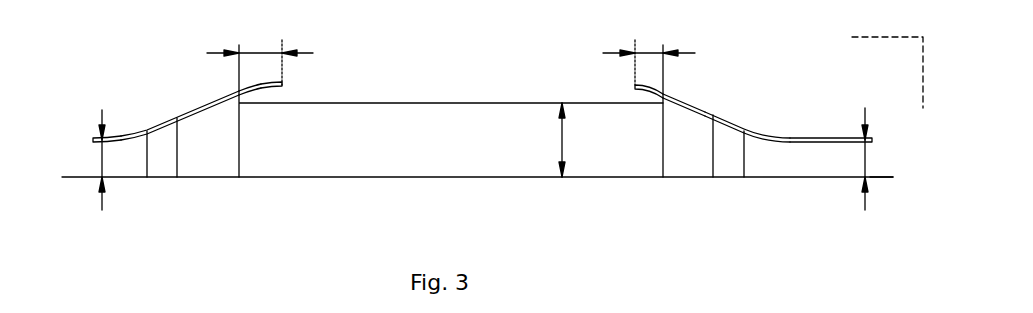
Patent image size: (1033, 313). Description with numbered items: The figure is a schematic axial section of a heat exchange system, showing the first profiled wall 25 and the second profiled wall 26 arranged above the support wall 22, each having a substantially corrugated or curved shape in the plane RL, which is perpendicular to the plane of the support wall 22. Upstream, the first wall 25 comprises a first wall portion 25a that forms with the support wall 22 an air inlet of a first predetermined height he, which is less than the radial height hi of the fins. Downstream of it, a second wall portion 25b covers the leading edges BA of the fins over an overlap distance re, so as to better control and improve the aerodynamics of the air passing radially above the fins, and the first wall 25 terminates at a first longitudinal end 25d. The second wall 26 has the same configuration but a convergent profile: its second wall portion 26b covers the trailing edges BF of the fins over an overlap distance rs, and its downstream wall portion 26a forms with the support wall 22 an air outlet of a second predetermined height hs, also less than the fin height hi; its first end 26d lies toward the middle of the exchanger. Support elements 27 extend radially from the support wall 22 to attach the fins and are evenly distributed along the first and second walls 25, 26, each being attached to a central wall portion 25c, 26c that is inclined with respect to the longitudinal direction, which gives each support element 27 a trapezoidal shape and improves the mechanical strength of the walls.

The support wall 22 is at (813, 178).
The first profiled wall 25 is at (211, 87).
The first wall portion 25a is at (99, 137).
The second wall portion 25b is at (262, 83).
The central wall portion 25c is at (161, 122).
The first longitudinal end 25d is at (282, 85).
The second profiled wall 26 is at (703, 92).
The downstream wall portion 26a is at (855, 137).
The second wall portion 26b is at (678, 98).
The central wall portion 26c is at (740, 126).
The first end 26d is at (635, 88).
The support element 27 is at (165, 173).
The leading edge BA is at (239, 153).
The trailing edge BF is at (663, 148).
The first predetermined height he is at (88, 160).
The second predetermined height hs is at (878, 159).
The radial height of the fins hi is at (551, 140).
The overlap distance re is at (260, 56).
The overlap distance rs is at (649, 56).
The plane RL is at (918, 42).